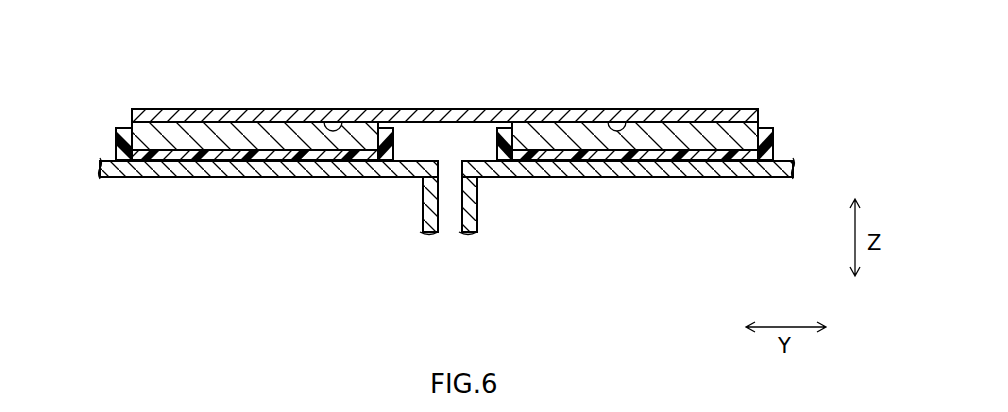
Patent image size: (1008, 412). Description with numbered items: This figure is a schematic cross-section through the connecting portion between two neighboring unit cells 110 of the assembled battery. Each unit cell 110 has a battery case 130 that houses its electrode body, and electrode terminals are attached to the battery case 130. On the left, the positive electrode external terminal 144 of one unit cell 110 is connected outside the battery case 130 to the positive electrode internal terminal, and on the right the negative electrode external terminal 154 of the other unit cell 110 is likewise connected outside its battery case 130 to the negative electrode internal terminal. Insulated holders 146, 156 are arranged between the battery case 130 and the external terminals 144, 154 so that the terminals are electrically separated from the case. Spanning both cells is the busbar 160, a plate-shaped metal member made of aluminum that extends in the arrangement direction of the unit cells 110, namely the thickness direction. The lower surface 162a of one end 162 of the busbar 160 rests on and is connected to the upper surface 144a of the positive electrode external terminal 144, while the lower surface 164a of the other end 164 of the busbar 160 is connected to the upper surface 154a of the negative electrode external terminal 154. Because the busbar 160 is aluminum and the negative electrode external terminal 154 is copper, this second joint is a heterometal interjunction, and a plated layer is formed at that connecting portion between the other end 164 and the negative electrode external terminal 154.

The unit cell 110 is at (445, 194).
The battery case 130 is at (102, 161).
The positive electrode external terminal 144 is at (255, 104).
The upper surface of the positive electrode external terminal 144a is at (197, 127).
The insulated holder 146 is at (127, 127).
The negative electrode external terminal 154 is at (635, 103).
The upper surface of the negative electrode external terminal 154a is at (665, 120).
The insulated holder 156 is at (768, 128).
The busbar 160 is at (474, 100).
The one end of the busbar 162 is at (255, 91).
The lower surface of one end of the busbar 162a is at (328, 124).
The other end of the busbar 164 is at (635, 92).
The lower surface of the other end of the busbar 164a is at (607, 122).